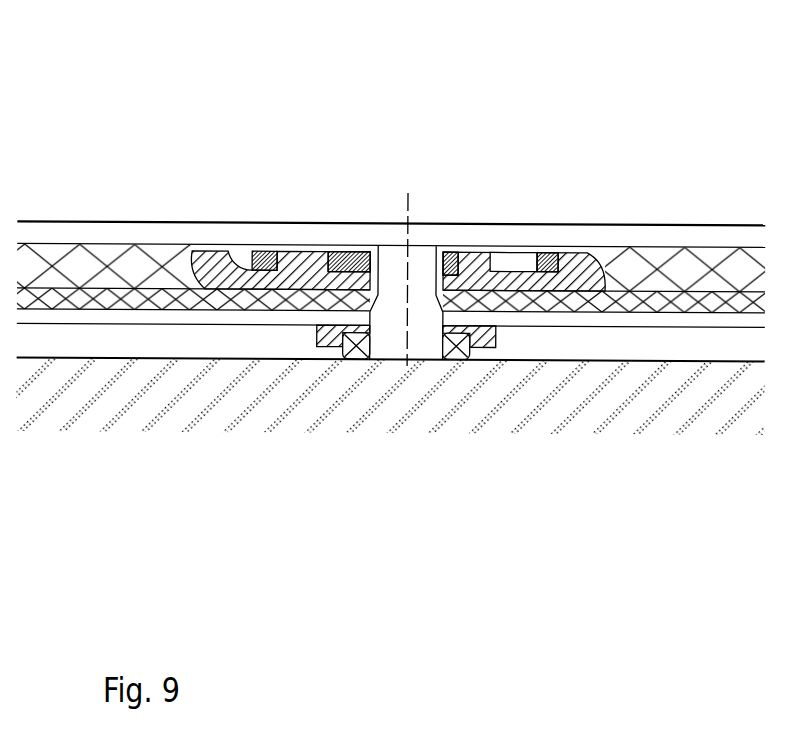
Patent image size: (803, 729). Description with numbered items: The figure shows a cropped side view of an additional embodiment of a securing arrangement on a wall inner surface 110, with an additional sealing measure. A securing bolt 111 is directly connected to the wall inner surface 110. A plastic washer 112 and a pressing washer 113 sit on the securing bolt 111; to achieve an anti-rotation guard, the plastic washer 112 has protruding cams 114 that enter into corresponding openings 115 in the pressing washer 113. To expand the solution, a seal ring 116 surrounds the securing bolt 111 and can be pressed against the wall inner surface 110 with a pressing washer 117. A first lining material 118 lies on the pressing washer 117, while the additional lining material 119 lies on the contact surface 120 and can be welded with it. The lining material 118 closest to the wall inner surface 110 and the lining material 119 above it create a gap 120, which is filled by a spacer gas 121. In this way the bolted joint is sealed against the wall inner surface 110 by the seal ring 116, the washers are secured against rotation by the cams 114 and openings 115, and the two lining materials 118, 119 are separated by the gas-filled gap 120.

The wall inner surface 110 is at (565, 395).
The securing bolt 111 is at (413, 272).
The plastic washer 112 is at (603, 262).
The pressing washer 113 is at (463, 252).
The protruding cams 114 is at (296, 250).
The openings 115 is at (283, 250).
The seal ring 116 is at (352, 345).
The pressing washer 117 is at (473, 345).
The first lining material 118 is at (166, 335).
The additional lining material 119 is at (708, 235).
The contact surface / gap 120 is at (596, 256).
The spacer gas 121 is at (655, 295).